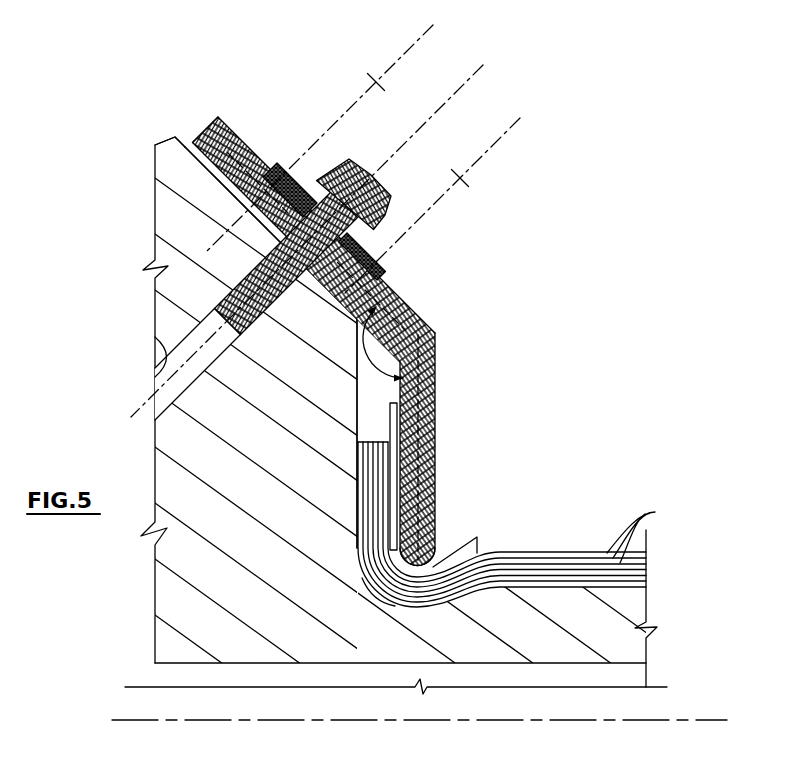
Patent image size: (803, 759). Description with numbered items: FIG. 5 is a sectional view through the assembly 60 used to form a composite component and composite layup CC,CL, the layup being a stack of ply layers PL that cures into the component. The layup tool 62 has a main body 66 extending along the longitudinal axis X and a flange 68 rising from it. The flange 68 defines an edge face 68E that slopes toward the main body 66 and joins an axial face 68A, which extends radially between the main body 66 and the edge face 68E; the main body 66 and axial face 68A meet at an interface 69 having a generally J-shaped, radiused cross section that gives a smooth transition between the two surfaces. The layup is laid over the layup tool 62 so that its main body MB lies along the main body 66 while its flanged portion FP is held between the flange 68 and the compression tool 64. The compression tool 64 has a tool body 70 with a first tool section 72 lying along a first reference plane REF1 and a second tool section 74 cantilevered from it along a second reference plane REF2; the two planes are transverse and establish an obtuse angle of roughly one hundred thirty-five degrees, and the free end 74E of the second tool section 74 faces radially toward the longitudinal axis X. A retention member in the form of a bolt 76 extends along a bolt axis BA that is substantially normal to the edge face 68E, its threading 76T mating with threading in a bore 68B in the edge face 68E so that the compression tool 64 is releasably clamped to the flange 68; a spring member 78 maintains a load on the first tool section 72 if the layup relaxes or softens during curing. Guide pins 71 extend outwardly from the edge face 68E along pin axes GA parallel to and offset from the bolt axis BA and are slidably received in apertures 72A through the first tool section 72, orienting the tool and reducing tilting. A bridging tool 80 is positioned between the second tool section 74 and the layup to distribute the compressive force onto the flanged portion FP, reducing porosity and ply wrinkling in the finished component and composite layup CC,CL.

The assembly 60 is at (108, 74).
The layup tool 62 is at (157, 145).
The compression tool 64 is at (212, 112).
The main body 66 is at (630, 606).
The flange 68 is at (155, 252).
The axial face 68A is at (398, 412).
The bore 68B is at (155, 372).
The edge face 68E is at (190, 143).
The interface 69 is at (358, 590).
The tool body 70 is at (420, 314).
The guide pin 71 is at (372, 85).
The first tool section 72 is at (229, 141).
The aperture 72A is at (278, 176).
The second tool section 74 is at (436, 436).
The free end 74E is at (433, 568).
The bolt 76 is at (398, 182).
The threading 76T is at (247, 318).
The spring member 78 is at (330, 162).
The bridging tool 80 is at (360, 415).
The pin axis GA is at (415, 42).
The bolt axis BA is at (466, 92).
The first reference plane REF1 is at (232, 135).
The second reference plane REF2 is at (418, 508).
The flanged portion FP is at (397, 472).
The main body MB is at (530, 551).
The component and composite layup CC,CL is at (590, 540).
The ply layers PL is at (645, 532).
The longitudinal axis X is at (706, 717).